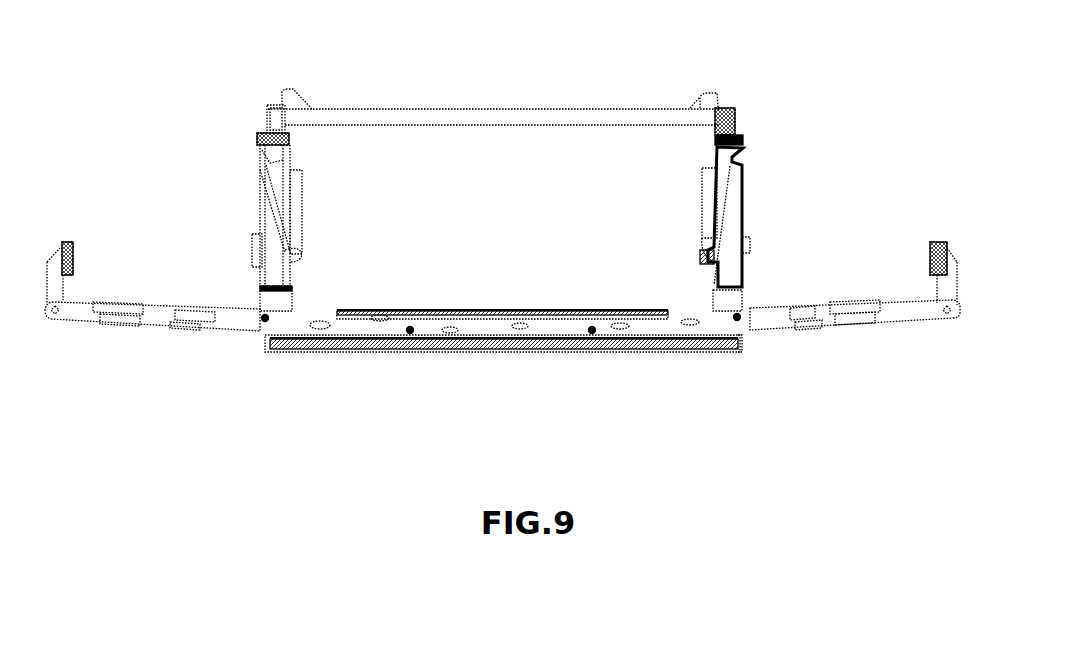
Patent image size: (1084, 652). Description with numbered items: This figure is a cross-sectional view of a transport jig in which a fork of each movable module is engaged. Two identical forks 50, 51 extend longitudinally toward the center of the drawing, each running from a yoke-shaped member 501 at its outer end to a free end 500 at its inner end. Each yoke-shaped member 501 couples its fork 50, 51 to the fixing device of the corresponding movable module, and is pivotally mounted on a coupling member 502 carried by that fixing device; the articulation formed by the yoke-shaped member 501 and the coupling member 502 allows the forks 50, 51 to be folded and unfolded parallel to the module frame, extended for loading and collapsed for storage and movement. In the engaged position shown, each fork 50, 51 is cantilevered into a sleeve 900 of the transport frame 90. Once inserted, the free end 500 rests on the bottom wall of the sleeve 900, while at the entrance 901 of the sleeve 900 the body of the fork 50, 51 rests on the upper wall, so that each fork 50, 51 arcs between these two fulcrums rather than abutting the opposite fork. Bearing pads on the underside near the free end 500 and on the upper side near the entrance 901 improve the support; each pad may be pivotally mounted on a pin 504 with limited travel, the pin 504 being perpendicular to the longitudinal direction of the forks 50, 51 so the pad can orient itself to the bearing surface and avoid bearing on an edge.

The transport frame 90 is at (735, 106).
The free end 500 is at (440, 308).
The sleeve 900 is at (674, 346).
The entrance 901 is at (744, 346).
The pin 504 is at (745, 313).
The fork 50 is at (203, 355).
The fork 51 is at (808, 343).
The yoke-shaped member 501 is at (165, 305).
The coupling member 502 is at (100, 322).